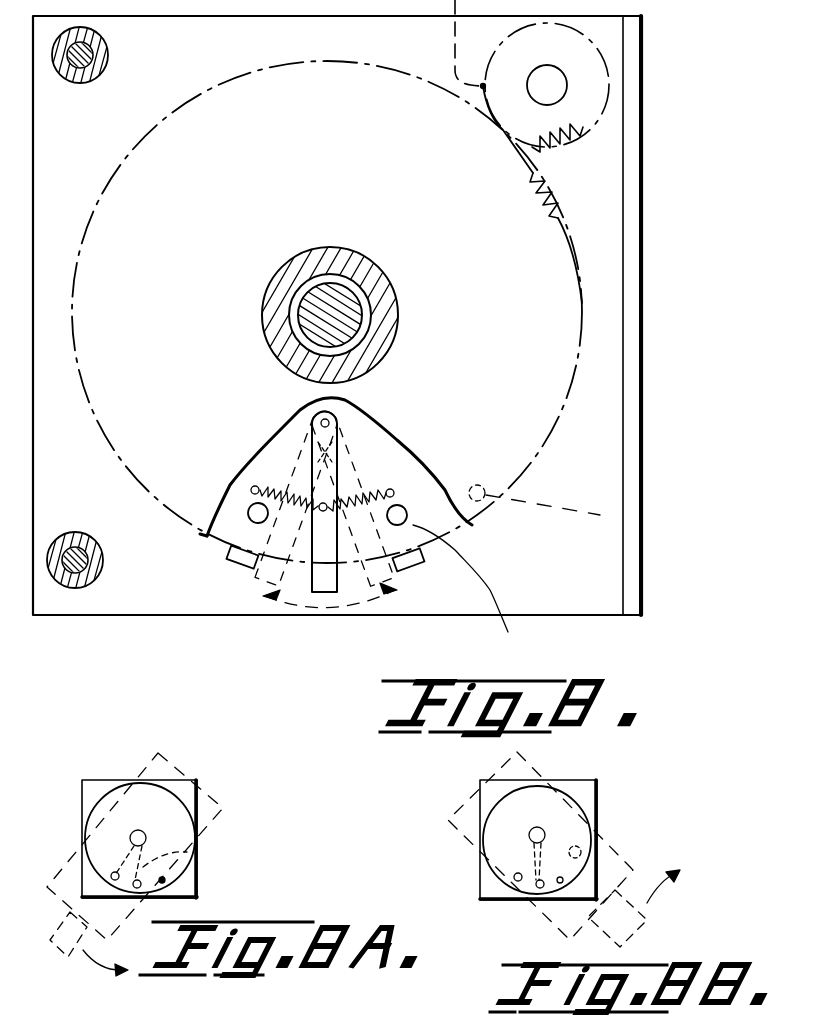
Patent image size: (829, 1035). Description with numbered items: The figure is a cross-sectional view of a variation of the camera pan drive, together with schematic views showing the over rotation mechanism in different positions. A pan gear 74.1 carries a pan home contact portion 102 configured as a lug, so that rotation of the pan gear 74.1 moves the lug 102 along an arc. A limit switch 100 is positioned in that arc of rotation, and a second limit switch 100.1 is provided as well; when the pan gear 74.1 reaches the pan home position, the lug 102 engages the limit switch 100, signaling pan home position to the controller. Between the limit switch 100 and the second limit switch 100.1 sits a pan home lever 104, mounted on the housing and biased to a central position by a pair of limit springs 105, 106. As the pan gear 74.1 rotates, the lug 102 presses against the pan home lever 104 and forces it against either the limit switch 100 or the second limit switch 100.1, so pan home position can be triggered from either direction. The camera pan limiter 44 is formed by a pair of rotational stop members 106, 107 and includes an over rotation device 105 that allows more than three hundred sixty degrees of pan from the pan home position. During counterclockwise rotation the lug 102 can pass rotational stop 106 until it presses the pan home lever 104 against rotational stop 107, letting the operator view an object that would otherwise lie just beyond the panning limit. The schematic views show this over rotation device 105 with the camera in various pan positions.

In FIG. 8, the pan home contact portion 102 is at (623, 518).
In FIG. 8A, the pan home contact portion 102 is at (197, 866).
In FIG. 8B, the pan home contact portion 102 is at (597, 826).
In FIG. 8, the pan gear 74.1 is at (551, 265).
In FIG. 8, the pan home lever 104 is at (338, 428).
In FIG. 8, the limit spring 105 is at (243, 472).
In FIG. 8, the limit spring 106 is at (378, 490).
In FIG. 8, the limit switch 100 is at (237, 567).
In FIG. 8, the second limit switch 100.1 is at (415, 570).
In FIG. 8, the rotational stop member 107 is at (473, 591).
In FIG. 8, the camera pan limiter 44 is at (408, 513).